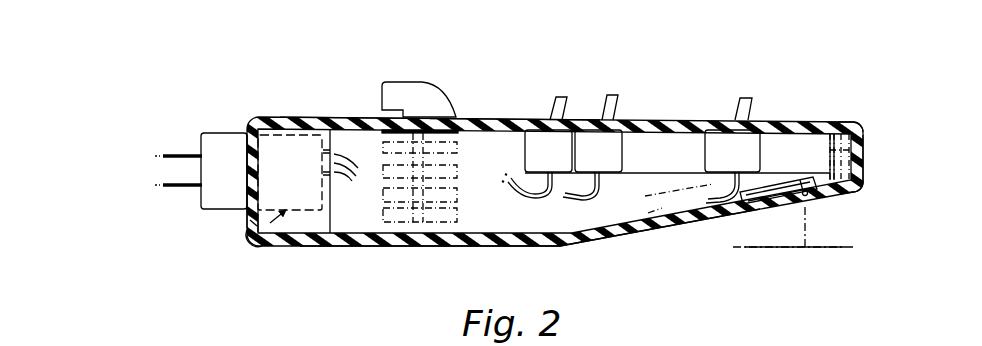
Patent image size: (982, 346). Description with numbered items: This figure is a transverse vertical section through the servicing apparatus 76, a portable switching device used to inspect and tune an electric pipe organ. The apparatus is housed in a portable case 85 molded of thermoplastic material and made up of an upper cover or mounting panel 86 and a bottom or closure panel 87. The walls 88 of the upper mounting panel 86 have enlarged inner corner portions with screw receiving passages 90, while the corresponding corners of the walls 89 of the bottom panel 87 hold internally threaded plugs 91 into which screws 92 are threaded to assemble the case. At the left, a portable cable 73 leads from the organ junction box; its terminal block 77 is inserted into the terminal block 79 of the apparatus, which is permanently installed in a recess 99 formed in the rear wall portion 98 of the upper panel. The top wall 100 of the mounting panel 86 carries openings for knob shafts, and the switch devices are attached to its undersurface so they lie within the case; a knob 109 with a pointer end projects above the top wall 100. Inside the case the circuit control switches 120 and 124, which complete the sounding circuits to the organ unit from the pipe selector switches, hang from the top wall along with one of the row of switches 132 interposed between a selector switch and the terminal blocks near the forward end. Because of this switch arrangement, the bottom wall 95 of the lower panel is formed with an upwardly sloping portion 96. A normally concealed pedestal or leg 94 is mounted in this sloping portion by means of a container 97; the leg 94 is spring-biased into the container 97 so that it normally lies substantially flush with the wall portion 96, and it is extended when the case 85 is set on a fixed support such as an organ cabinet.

The portable cable 73 is at (188, 168).
The terminal block 77 is at (222, 146).
The terminal block 79 is at (279, 137).
The portable case 85 is at (302, 246).
The upper cover or mounting panel 86 is at (318, 122).
The bottom or closure panel 87 is at (360, 246).
The walls of the upper mounting panel 88 is at (864, 147).
The walls of the bottom panel 89 is at (250, 218).
The screw receiving passages 90 is at (831, 150).
The internally threaded plugs 91 is at (858, 190).
The screws 92 is at (838, 123).
The pedestal or leg 94 is at (808, 212).
The bottom wall 95 is at (467, 240).
The upwardly sloping portion 96 is at (662, 225).
The container 97 is at (768, 205).
The rear wall portion 98 is at (247, 122).
The recesses 99 is at (255, 244).
The top wall 100 is at (485, 122).
The knob 109 is at (420, 100).
The circuit control switch 120 is at (559, 95).
The circuit control switch 124 is at (613, 105).
The switch 132 is at (749, 110).
The servicing apparatus 76 is at (386, 74).